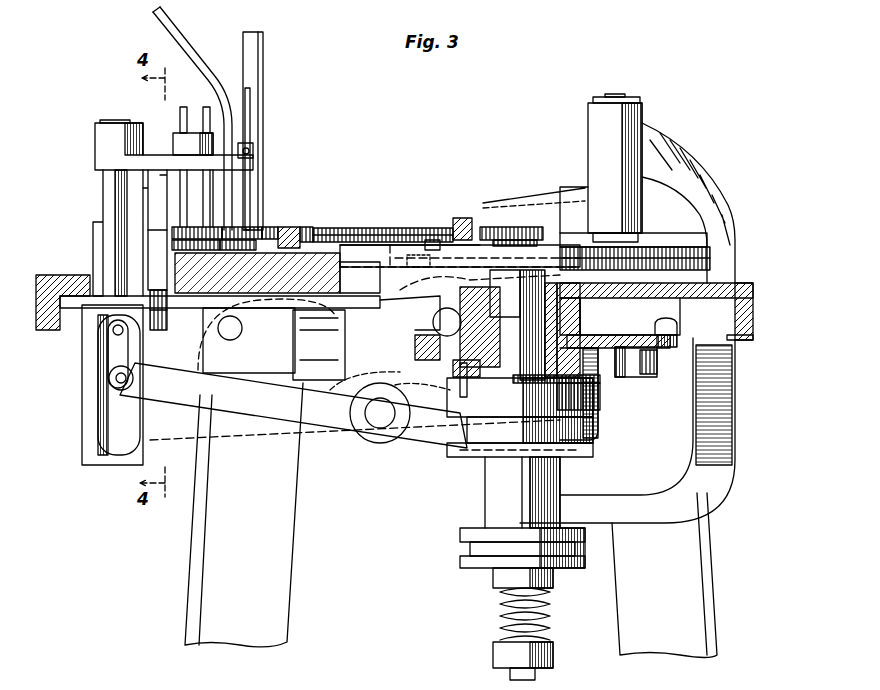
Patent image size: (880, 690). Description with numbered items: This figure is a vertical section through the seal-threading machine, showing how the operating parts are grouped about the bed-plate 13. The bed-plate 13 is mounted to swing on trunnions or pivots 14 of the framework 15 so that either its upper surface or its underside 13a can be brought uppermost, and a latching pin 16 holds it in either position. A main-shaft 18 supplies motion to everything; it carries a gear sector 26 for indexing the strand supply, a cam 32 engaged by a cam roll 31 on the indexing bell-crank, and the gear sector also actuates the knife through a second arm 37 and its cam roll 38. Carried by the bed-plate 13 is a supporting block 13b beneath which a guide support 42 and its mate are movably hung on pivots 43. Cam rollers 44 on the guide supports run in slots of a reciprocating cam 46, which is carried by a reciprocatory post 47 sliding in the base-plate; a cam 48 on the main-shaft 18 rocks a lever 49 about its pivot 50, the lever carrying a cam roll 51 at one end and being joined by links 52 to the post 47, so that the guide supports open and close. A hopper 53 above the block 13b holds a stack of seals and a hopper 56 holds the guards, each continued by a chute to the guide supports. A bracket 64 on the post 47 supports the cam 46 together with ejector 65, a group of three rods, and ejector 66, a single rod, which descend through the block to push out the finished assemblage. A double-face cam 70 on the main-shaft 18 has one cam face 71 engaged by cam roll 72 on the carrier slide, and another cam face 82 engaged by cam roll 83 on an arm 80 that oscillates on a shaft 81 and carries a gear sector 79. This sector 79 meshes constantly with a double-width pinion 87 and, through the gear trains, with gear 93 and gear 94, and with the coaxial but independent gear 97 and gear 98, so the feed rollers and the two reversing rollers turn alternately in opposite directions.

The bed-plate 13 is at (53, 323).
The underside of bed-plate 13a is at (605, 298).
The supporting block 13b is at (292, 277).
The trunnions or pivots 14 is at (427, 328).
The framework 15 is at (268, 553).
The latching pin 16 is at (695, 287).
The main-shaft 18 is at (547, 595).
The gear sector 26 is at (738, 292).
The cam roll 31 is at (670, 362).
The cam 32 is at (623, 368).
The second arm 37 is at (357, 380).
The cam roll 38 is at (400, 400).
The guide support 42 is at (305, 303).
The pivots 43 is at (444, 302).
The cam rollers 44 is at (160, 320).
The reciprocating cam 46 is at (153, 237).
The reciprocatory post 47 is at (105, 180).
The cam 48 is at (590, 427).
The lever 49 is at (427, 440).
The lever pivot 50 is at (378, 418).
The cam roll 51 is at (487, 450).
The links 52 is at (113, 357).
The hopper 53 is at (263, 62).
The hopper 56 is at (183, 33).
The bracket 64 is at (232, 162).
The ejector 65 is at (197, 107).
The ejector 66 is at (250, 106).
The double-face cam 70 is at (675, 248).
The cam face 71 is at (443, 258).
The cam roll 72 is at (418, 256).
The gear sector 79 is at (345, 228).
The arm 80 is at (565, 215).
The shaft 81 is at (620, 103).
The cam face 82 is at (432, 240).
The cam roll 83 is at (513, 228).
The double-width pinion 87 is at (303, 228).
The gear 93 is at (240, 228).
The gear 94 is at (183, 231).
The gear 97 is at (265, 228).
The gear 98 is at (177, 243).